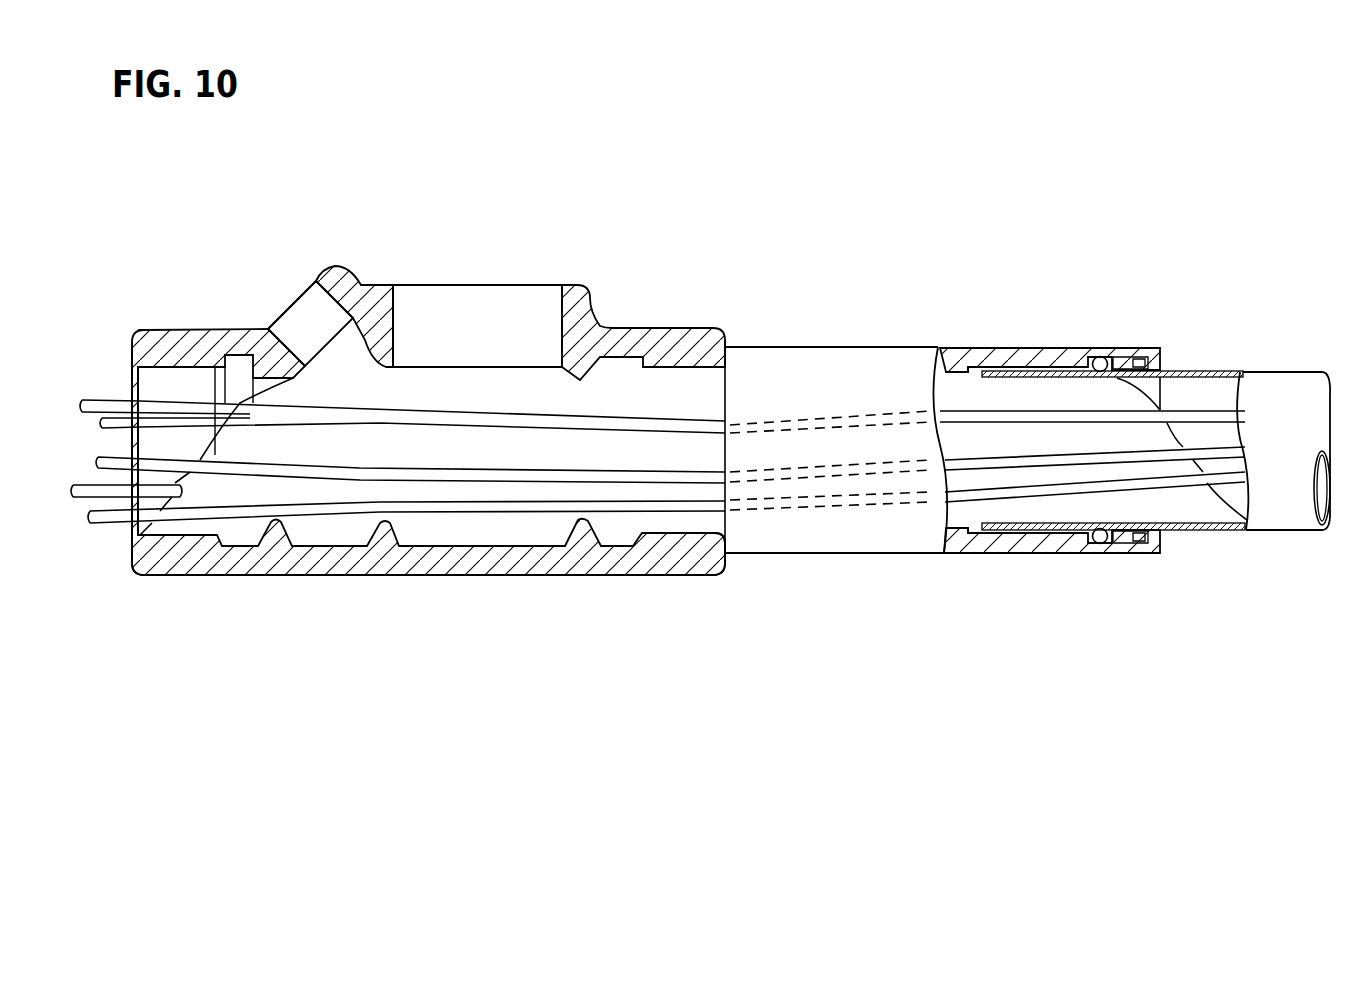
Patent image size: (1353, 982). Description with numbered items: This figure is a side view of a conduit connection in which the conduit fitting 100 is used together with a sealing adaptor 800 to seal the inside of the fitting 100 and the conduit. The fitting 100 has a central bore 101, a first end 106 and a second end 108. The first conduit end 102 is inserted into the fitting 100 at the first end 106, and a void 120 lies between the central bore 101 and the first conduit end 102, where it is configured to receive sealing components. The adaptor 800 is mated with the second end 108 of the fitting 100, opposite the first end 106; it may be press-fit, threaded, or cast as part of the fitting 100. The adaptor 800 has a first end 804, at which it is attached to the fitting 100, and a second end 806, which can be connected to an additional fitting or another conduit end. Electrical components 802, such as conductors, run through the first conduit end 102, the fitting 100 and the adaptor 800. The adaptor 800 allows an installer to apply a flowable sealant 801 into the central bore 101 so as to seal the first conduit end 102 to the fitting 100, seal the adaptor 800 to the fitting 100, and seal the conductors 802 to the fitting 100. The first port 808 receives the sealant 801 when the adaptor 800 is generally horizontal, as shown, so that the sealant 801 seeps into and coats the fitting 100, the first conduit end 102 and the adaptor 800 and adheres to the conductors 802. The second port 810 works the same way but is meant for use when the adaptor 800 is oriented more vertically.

The conduit fitting 100 is at (847, 381).
The central bore 101 is at (968, 535).
The first conduit end 102 is at (1284, 392).
The first end 106 is at (1132, 350).
The second end 108 is at (785, 535).
The void 120 is at (972, 374).
The sealing adaptor 800 is at (353, 600).
The flowable sealant 801 is at (672, 397).
The electrical components 802 is at (634, 507).
The first end 804 is at (703, 567).
The second end 806 is at (157, 562).
The first port 808 is at (476, 307).
The second port 810 is at (310, 305).